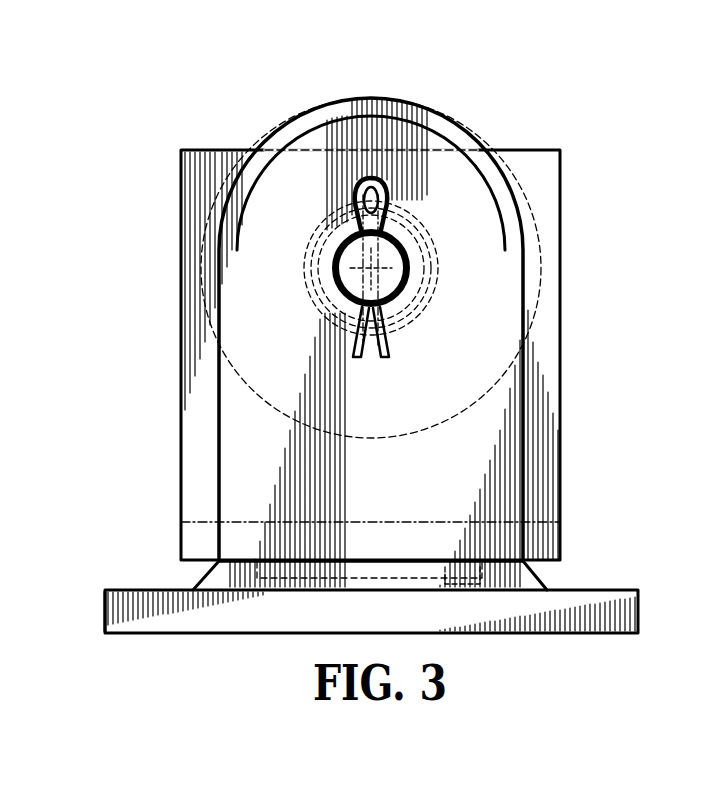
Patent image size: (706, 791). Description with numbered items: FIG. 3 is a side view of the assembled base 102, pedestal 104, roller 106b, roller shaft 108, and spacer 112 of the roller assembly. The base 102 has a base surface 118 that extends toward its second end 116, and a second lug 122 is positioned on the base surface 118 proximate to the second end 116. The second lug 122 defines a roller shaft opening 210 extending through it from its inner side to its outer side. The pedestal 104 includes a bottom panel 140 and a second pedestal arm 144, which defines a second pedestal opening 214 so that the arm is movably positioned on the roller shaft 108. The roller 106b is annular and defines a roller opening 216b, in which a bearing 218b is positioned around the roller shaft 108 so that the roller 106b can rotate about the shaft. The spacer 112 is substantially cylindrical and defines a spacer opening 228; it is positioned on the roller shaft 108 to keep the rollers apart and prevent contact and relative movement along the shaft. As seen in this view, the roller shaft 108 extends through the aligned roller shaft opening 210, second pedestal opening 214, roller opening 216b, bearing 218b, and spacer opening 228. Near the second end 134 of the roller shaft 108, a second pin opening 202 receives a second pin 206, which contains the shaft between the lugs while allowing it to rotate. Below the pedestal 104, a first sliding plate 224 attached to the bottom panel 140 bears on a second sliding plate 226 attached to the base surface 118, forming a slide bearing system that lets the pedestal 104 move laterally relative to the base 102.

The base 102 is at (118, 634).
The pedestal 104 is at (556, 494).
The roller 106b is at (462, 134).
The roller shaft 108 is at (333, 276).
The spacer 112 is at (410, 213).
The second end 116 is at (104, 603).
The base surface 118 is at (131, 590).
The second lug 122 is at (376, 126).
The second end 134 is at (353, 293).
The bottom panel 140 is at (546, 549).
The second pedestal arm 144 is at (560, 405).
The second pin opening 202 is at (312, 252).
The second pin 206 is at (360, 185).
The roller shaft opening 210 is at (411, 272).
The second pedestal opening 214 is at (341, 236).
The roller opening 216b is at (433, 238).
The bearing 218b is at (412, 298).
The first sliding plate 224 is at (445, 588).
The second sliding plate 226 is at (455, 587).
The spacer opening 228 is at (433, 240).